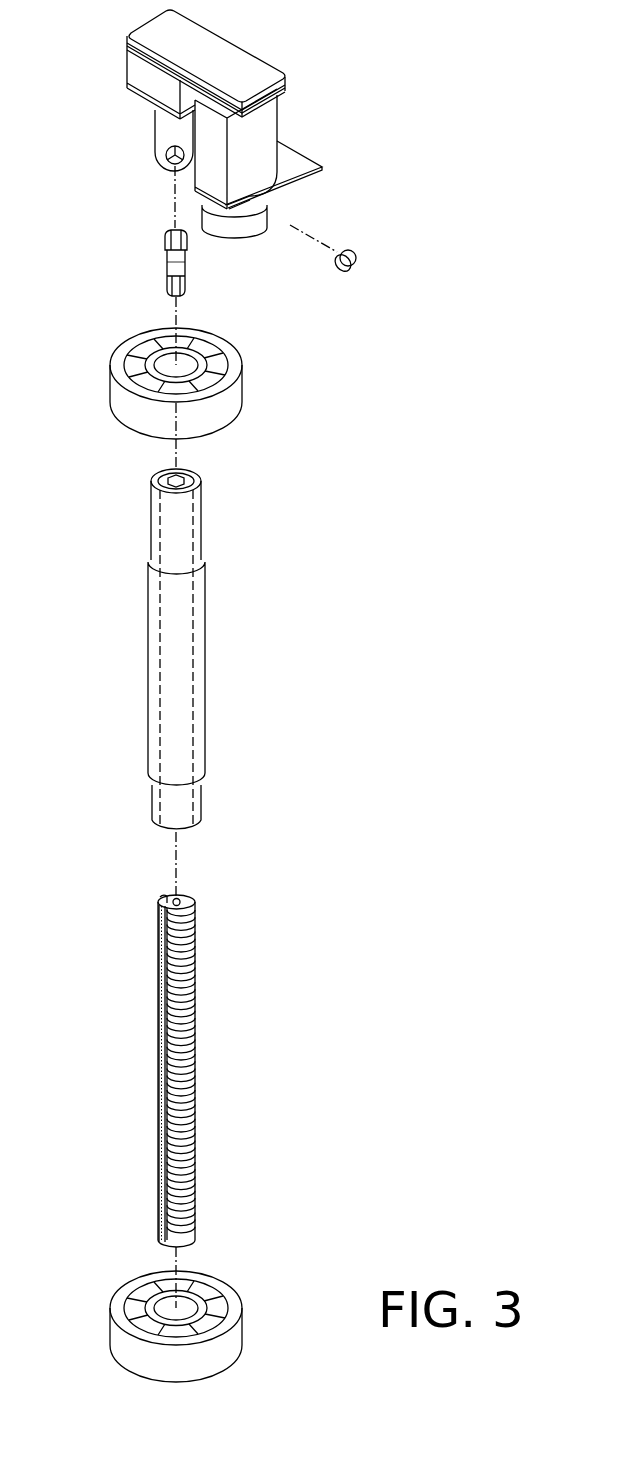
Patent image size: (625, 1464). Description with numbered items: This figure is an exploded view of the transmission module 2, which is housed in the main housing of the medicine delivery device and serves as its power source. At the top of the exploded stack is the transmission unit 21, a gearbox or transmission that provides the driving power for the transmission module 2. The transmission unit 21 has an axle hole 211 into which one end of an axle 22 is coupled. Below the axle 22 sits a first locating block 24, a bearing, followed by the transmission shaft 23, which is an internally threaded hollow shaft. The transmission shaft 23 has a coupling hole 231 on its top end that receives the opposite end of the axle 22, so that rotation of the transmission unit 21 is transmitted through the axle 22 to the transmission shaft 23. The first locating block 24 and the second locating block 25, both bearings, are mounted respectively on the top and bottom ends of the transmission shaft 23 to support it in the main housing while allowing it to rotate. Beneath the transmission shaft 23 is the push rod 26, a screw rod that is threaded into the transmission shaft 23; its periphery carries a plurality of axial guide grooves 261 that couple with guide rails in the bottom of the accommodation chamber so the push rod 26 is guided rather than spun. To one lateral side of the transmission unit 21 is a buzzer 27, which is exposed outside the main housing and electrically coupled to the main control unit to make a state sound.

The transmission module 2 is at (445, 183).
The transmission unit 21 is at (288, 118).
The axle hole 211 is at (163, 143).
The axle 22 is at (173, 265).
The transmission shaft 23 is at (214, 650).
The coupling hole 231 is at (185, 470).
The first locating block 24 is at (222, 359).
The second locating block 25 is at (135, 1298).
The push rod 26 is at (207, 1057).
The axial guide groove 261 is at (185, 897).
The buzzer 27 is at (368, 272).